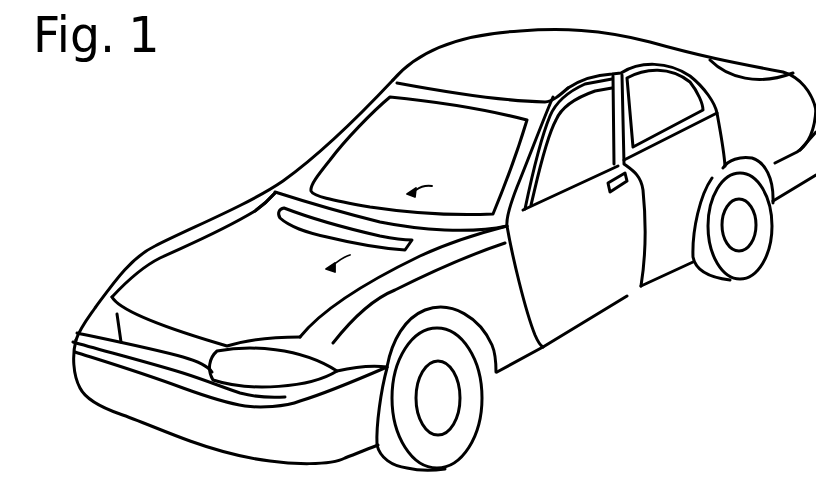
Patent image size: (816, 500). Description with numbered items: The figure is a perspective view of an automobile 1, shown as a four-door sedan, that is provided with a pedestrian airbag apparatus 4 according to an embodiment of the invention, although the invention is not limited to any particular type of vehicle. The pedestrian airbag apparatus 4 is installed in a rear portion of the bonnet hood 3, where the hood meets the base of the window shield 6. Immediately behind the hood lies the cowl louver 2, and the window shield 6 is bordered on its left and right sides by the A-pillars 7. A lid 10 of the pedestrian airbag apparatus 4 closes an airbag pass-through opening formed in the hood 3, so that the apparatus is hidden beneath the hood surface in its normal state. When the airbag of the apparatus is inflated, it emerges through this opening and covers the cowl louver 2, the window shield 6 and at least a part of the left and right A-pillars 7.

The automobile 1 is at (331, 111).
The cowl louver 2 is at (351, 215).
The bonnet hood 3 is at (180, 258).
The pedestrian airbag apparatus 4 is at (280, 226).
The window shield 6 is at (358, 165).
The A-pillars 7 is at (362, 118).
The lid 10 is at (303, 231).